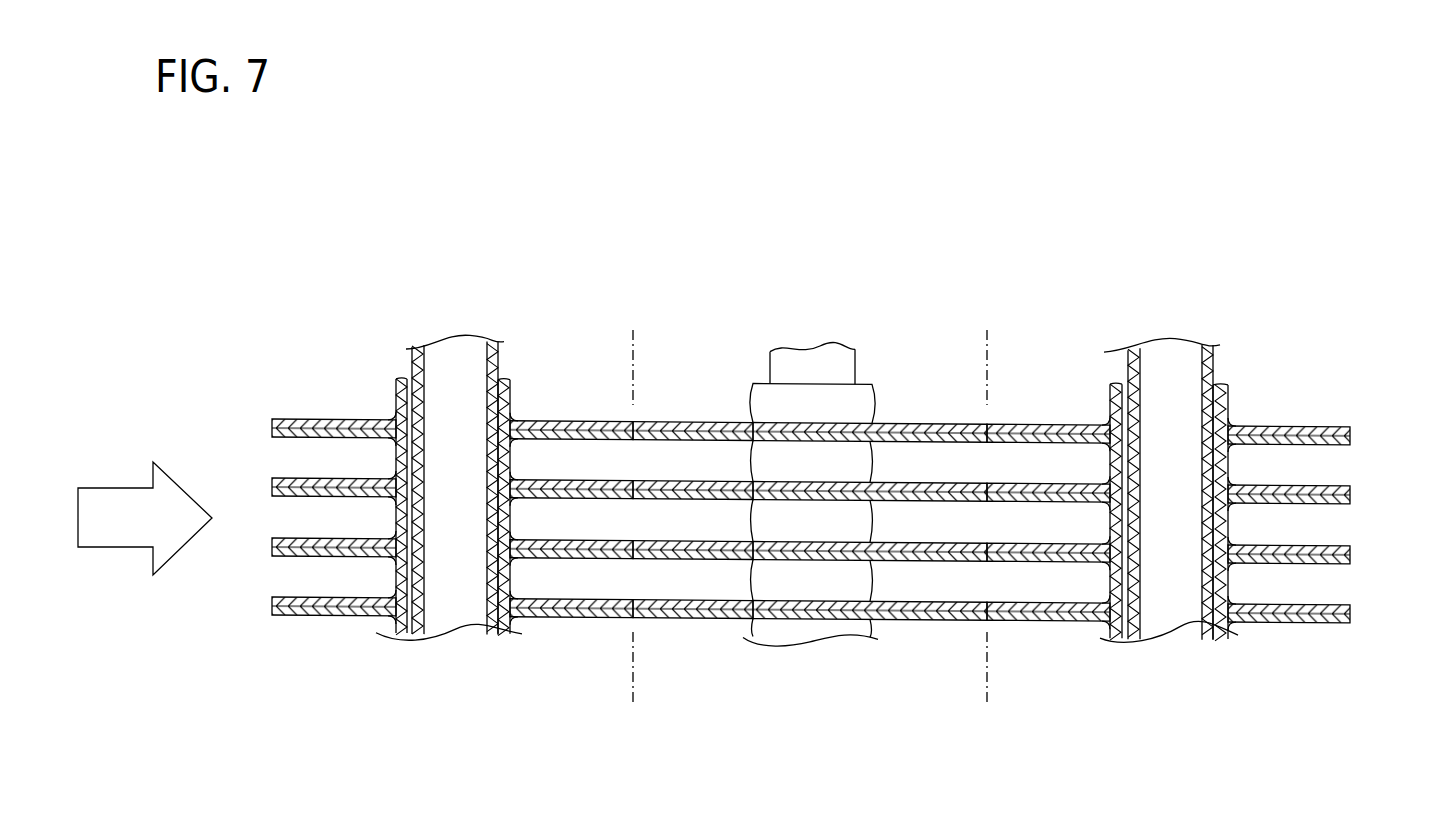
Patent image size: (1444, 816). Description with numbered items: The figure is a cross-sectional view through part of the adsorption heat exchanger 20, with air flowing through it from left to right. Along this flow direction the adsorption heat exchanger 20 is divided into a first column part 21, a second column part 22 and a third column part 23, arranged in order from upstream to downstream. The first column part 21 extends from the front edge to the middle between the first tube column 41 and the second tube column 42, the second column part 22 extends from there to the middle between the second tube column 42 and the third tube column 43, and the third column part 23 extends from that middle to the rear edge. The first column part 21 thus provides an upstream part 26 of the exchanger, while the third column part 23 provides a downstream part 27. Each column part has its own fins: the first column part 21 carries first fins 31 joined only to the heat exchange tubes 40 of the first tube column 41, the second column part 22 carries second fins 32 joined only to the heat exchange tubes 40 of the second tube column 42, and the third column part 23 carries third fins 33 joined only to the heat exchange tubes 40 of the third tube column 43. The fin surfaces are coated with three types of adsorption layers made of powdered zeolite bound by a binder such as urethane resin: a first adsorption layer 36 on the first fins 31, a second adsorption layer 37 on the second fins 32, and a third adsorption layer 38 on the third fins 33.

The adsorption heat exchanger 20 is at (316, 290).
The first column part 21 is at (489, 648).
The second column part 22 is at (863, 651).
The third column part 23 is at (1223, 654).
The upstream part 26 is at (378, 628).
The downstream part 27 is at (1245, 640).
The first fins 31 is at (272, 428).
The second fins 32 is at (944, 424).
The third fins 33 is at (1352, 436).
The first adsorption layer 36 is at (570, 421).
The second adsorption layer 37 is at (705, 422).
The third adsorption layer 38 is at (1060, 423).
The heat exchange tubes 40 is at (412, 348).
The first tube column 41 is at (497, 358).
The second tube column 42 is at (857, 358).
The third tube column 43 is at (1213, 362).